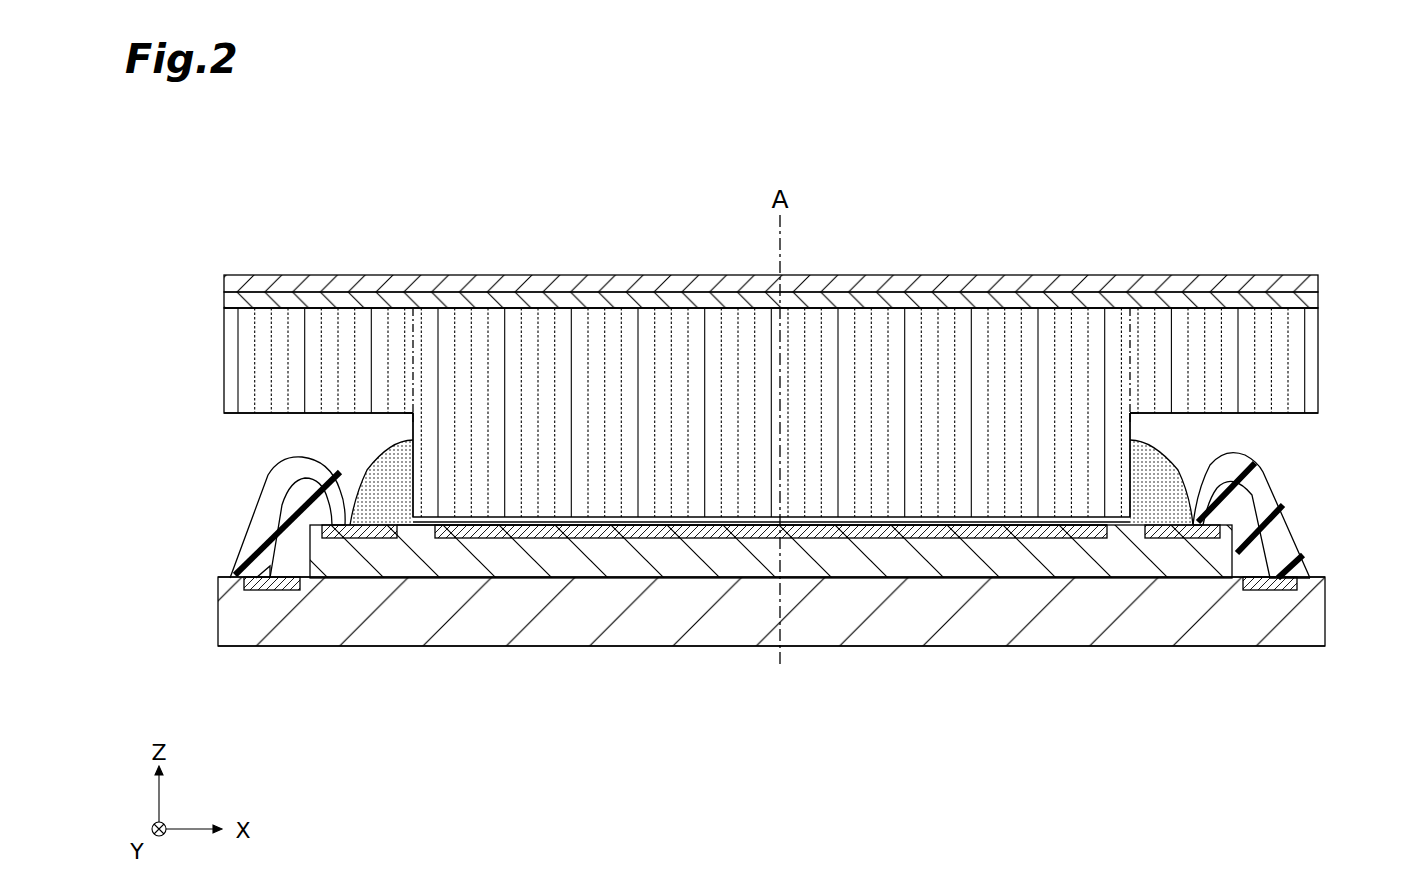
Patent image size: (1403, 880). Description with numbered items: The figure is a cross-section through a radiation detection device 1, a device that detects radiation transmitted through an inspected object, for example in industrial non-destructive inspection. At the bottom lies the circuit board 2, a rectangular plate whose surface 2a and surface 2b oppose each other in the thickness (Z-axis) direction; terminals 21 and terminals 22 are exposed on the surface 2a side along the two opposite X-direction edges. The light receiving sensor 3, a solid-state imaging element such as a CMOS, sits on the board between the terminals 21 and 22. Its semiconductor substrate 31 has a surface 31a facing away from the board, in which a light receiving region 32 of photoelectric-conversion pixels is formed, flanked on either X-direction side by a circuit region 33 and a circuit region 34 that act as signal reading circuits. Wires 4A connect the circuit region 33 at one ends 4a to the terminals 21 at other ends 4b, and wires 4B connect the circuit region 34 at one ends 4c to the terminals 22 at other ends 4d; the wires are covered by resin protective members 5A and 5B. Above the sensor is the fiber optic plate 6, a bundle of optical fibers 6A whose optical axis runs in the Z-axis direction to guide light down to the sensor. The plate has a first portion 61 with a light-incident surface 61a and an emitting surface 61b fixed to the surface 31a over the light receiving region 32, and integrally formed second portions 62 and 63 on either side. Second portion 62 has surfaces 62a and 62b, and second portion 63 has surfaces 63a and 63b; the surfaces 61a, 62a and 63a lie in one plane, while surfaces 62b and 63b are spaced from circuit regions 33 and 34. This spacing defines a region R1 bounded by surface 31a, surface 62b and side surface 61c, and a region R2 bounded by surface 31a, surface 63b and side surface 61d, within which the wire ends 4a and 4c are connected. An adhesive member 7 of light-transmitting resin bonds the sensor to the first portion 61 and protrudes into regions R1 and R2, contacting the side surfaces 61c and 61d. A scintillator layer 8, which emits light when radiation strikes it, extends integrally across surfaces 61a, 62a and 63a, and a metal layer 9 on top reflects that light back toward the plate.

The radiation detection device 1 is at (1062, 173).
The circuit board 2 is at (232, 626).
The surface 2a is at (947, 577).
The surface 2b is at (913, 647).
The terminals 21 is at (1292, 589).
The terminals 22 is at (262, 588).
The light receiving sensor 3 is at (888, 565).
The semiconductor substrate 31 is at (712, 545).
The surface 31a is at (433, 517).
The light receiving region 32 is at (827, 537).
The circuit region 33 is at (1190, 527).
The circuit region 34 is at (396, 537).
The wires 4A is at (1262, 490).
The wires 4B is at (288, 484).
The one end 4a is at (1200, 470).
The other end 4b is at (1275, 562).
The one end 4c is at (352, 537).
The other end 4d is at (268, 574).
The protective member 5A is at (1277, 525).
The protective member 5B is at (278, 532).
The fiber optic plate 6 is at (773, 455).
The optical fibers 6A is at (774, 328).
The first portion 61 is at (993, 327).
The surface 61a is at (564, 306).
The surface 61b is at (1034, 522).
The side surface 61c is at (1133, 424).
The side surface 61d is at (411, 425).
The second portion 62 is at (1322, 358).
The surface 62a is at (1243, 306).
The surface 62b is at (1293, 413).
The second portion 63 is at (232, 357).
The surface 63a is at (292, 306).
The surface 63b is at (238, 413).
The adhesive member 7 is at (370, 468).
The scintillator layer 8 is at (1322, 302).
The metal layer 9 is at (1322, 284).
The region R1 is at (1184, 437).
The region R2 is at (412, 418).